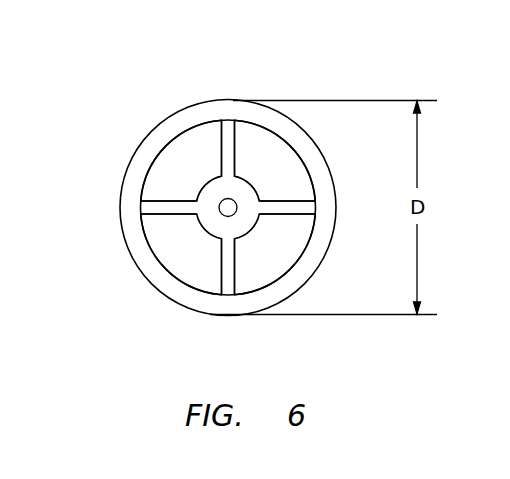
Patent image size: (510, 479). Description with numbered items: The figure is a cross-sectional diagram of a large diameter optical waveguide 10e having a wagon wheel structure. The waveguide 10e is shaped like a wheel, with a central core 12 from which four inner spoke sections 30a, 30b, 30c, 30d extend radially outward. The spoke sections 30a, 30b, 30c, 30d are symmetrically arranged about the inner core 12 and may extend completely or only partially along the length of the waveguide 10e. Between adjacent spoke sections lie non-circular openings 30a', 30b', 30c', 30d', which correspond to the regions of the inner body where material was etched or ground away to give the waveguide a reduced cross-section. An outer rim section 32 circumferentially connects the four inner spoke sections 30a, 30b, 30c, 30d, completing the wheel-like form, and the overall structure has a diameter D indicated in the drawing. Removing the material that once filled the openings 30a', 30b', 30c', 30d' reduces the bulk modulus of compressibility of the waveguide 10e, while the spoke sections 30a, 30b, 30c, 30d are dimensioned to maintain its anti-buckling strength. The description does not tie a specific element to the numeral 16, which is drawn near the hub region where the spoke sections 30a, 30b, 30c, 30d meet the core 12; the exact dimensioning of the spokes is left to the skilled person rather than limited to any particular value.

The large diameter optical waveguide 10e is at (173, 78).
The core 12 is at (220, 205).
The central hub 16 is at (172, 203).
The inner spoke section 30a is at (245, 113).
The inner spoke section 30b is at (329, 223).
The inner spoke section 30c is at (229, 307).
The inner spoke section 30d is at (127, 220).
The non-circular opening 30a' is at (275, 160).
The non-circular opening 30b' is at (275, 254).
The non-circular opening 30c' is at (181, 254).
The non-circular opening 30d' is at (181, 160).
The outer rim section 32 is at (157, 281).